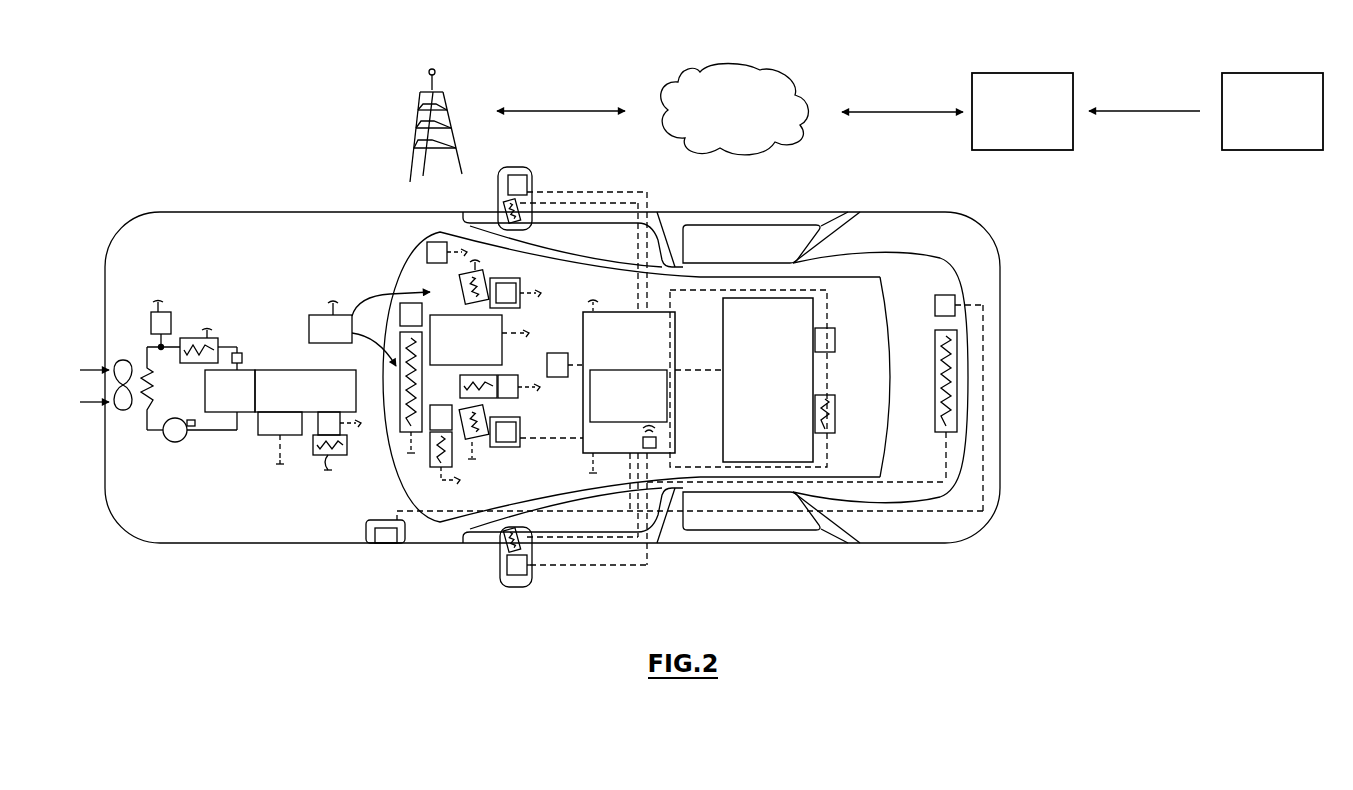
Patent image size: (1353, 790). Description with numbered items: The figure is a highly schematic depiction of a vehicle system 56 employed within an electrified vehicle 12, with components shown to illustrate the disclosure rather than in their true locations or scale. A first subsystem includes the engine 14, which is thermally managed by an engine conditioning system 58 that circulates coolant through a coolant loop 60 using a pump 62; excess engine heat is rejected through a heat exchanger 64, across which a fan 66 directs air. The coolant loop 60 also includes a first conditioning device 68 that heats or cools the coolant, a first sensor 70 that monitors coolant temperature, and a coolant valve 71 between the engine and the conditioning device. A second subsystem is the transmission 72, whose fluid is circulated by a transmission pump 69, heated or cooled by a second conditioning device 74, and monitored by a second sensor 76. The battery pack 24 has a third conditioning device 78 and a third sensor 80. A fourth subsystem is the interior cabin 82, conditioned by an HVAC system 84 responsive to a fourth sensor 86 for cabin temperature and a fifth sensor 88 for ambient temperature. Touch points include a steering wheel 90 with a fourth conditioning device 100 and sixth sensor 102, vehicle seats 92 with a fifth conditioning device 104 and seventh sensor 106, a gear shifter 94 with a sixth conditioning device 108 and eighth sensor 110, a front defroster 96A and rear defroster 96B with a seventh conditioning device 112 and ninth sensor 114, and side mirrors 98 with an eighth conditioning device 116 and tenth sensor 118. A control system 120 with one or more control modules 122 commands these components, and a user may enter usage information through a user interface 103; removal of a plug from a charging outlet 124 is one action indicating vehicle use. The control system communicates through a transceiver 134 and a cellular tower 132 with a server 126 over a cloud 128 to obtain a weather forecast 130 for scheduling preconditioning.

The electrified vehicle 12 is at (954, 206).
The engine 14 is at (205, 400).
The battery pack 24 is at (723, 405).
The vehicle system 56 is at (290, 482).
The engine conditioning system 58 is at (142, 302).
The coolant loop 60 is at (205, 430).
The pump 62 is at (175, 442).
The heat exchanger 64 is at (156, 388).
The fan 66 is at (117, 410).
The first conditioning device 68 is at (182, 338).
The transmission pump 69 is at (266, 435).
The first sensor 70 is at (166, 312).
The coolant valve 71 is at (242, 353).
The transmission 72 is at (303, 370).
The second conditioning device 74 is at (326, 470).
The second sensor 76 is at (320, 435).
The third conditioning device 78 is at (835, 412).
The third sensor 80 is at (835, 338).
The interior cabin 82 is at (563, 289).
The HVAC system 84 is at (315, 315).
The fourth sensor 86 is at (558, 353).
The fifth sensor 88 is at (427, 246).
The steering wheel 90 is at (436, 467).
The vehicle seat 92 is at (520, 302).
The gear shifter 94 is at (510, 398).
The front defroster 96A is at (400, 380).
The rear defroster 96B is at (935, 375).
The side mirror 98 is at (506, 167).
The fourth conditioning device 100 is at (452, 455).
The sixth sensor 102 is at (430, 466).
The user interface 103 is at (468, 315).
The fifth conditioning device 104 is at (462, 290).
The seventh sensor 106 is at (518, 278).
The sixth conditioning device 108 is at (460, 387).
The eighth sensor 110 is at (556, 377).
The seventh conditioning device 112 is at (407, 415).
The ninth sensor 114 is at (398, 314).
The eighth conditioning device 116 is at (506, 205).
The tenth sensor 118 is at (522, 175).
The control system 120 is at (676, 338).
The control module 122 is at (667, 393).
The charging outlet 124 is at (361, 520).
The server 126 is at (1035, 150).
The cloud 128 is at (785, 145).
The weather forecast 130 is at (1283, 150).
The cellular tower 132 is at (440, 100).
The transceiver 134 is at (657, 442).